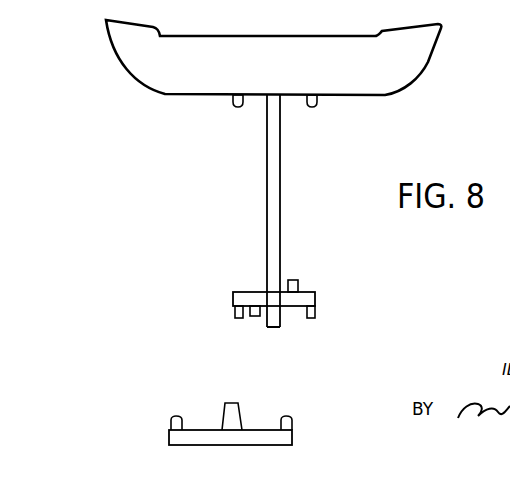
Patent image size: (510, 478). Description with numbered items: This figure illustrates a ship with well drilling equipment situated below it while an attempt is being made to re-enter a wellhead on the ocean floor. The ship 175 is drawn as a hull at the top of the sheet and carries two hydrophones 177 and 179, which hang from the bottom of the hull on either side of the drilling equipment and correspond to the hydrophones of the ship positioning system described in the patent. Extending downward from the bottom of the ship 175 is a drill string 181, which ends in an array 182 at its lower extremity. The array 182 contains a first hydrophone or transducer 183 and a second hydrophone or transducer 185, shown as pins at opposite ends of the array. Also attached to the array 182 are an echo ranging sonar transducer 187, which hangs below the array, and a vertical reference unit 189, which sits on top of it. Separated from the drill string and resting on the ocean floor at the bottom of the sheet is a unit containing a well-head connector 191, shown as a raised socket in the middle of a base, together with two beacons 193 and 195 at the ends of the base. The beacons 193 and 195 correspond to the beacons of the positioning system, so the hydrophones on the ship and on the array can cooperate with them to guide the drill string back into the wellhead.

The ship 175 is at (415, 31).
The hydrophone 177 is at (237, 107).
The hydrophone 179 is at (313, 107).
The drill string 181 is at (266, 170).
The array 182 is at (315, 292).
The first hydrophone or transducer 183 is at (234, 310).
The second hydrophone or transducer 185 is at (316, 310).
The echo ranging sonar transducer 187 is at (255, 317).
The vertical reference unit 189 is at (297, 280).
The well-head connector 191 is at (226, 410).
The beacon 193 is at (172, 422).
The beacon 195 is at (292, 420).